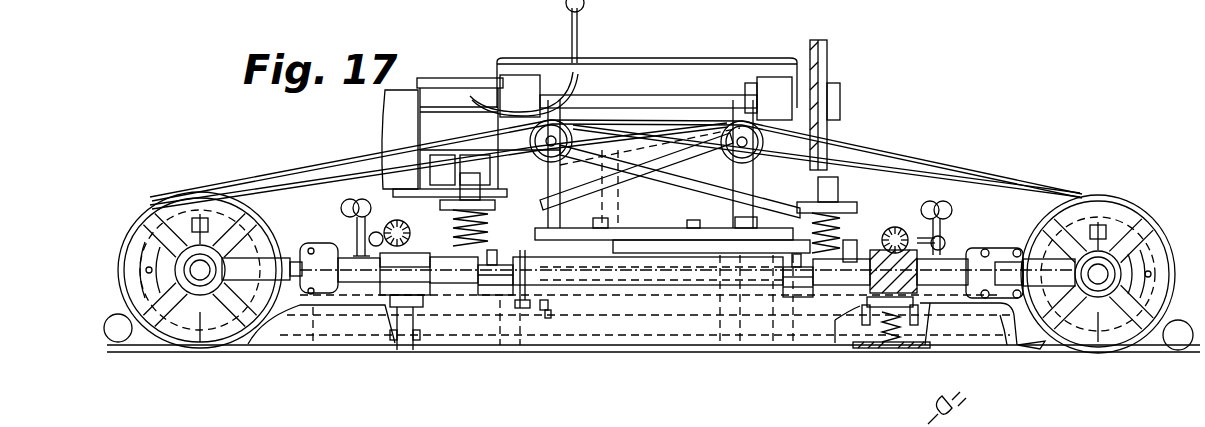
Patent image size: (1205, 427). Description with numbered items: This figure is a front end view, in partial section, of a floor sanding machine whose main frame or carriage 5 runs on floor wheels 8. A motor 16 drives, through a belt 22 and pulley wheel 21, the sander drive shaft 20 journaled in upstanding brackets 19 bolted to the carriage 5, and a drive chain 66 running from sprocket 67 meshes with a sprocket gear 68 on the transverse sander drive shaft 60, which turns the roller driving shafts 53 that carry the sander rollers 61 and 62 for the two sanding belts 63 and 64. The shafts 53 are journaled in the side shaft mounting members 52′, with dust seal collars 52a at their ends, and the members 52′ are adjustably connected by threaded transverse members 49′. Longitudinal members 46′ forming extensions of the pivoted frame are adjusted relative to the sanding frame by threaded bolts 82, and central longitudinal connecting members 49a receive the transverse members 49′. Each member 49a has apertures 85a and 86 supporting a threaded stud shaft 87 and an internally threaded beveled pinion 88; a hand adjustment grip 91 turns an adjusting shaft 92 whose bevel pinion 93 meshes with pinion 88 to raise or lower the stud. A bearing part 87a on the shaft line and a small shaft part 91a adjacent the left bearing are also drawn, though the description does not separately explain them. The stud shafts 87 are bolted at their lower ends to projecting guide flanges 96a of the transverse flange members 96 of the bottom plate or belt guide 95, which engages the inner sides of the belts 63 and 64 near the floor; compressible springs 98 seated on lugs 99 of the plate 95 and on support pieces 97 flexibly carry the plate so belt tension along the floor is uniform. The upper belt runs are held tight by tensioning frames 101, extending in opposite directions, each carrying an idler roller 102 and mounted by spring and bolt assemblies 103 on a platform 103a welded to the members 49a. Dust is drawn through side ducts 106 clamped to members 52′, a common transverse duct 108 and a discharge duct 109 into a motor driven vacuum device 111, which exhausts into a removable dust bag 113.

The main frame or support carriage 5 is at (732, 266).
The floor wheels 8 is at (722, 335).
The motor 16 is at (688, 60).
The upstanding brackets 19 is at (774, 76).
The sander drive shaft 20 is at (633, 92).
The pulley wheel 21 is at (830, 62).
The belt 22 is at (820, 42).
The longitudinally extending members 46′ is at (646, 257).
The transverse members 49′ is at (343, 245).
The central longitudinally extending connecting members 49a is at (495, 300).
The shaft mounting members 52′ is at (178, 260).
The dust seal collars 52a is at (184, 270).
The roller driving shafts 53 is at (198, 274).
The sander drive shaft 60 is at (660, 262).
The sander roller 61 is at (1142, 228).
The sander roller 62 is at (162, 217).
The sander belt 63 is at (1022, 188).
The sander belt 64 is at (1005, 175).
The drive chain 66 is at (570, 55).
The sprocket 67 is at (578, 86).
The sprocket gear 68 is at (548, 312).
The threaded bolts 82 is at (522, 305).
The aperture 85a is at (862, 262).
The aperture 86 is at (390, 300).
The threaded stud shaft 87 is at (915, 300).
The bearing block 87a is at (860, 330).
The beveled pinion 88 is at (878, 250).
The hand adjustment grip 91 is at (951, 210).
The shaft 91a is at (493, 300).
The adjusting shaft 92 is at (933, 222).
The bevel pinion 93 is at (646, 228).
The bottom plate skid or belt guide structure 95 is at (1030, 348).
The transverse flange members 96 is at (942, 312).
The projecting guide flanges 96a is at (855, 330).
The support pieces 97 is at (990, 332).
The compressible springs 98 is at (912, 328).
The lugs 99 is at (890, 345).
The tensioning frame 101 is at (626, 202).
The idler roller 102 is at (660, 218).
The spring and bolt assemblies 103 is at (455, 222).
The plate or platform 103a is at (672, 229).
The side ducts 106 is at (118, 343).
The transverse duct 108 is at (318, 330).
The discharge duct 109 is at (430, 312).
The motor driven vacuum device 111 is at (462, 78).
The dust bag 113 is at (388, 113).